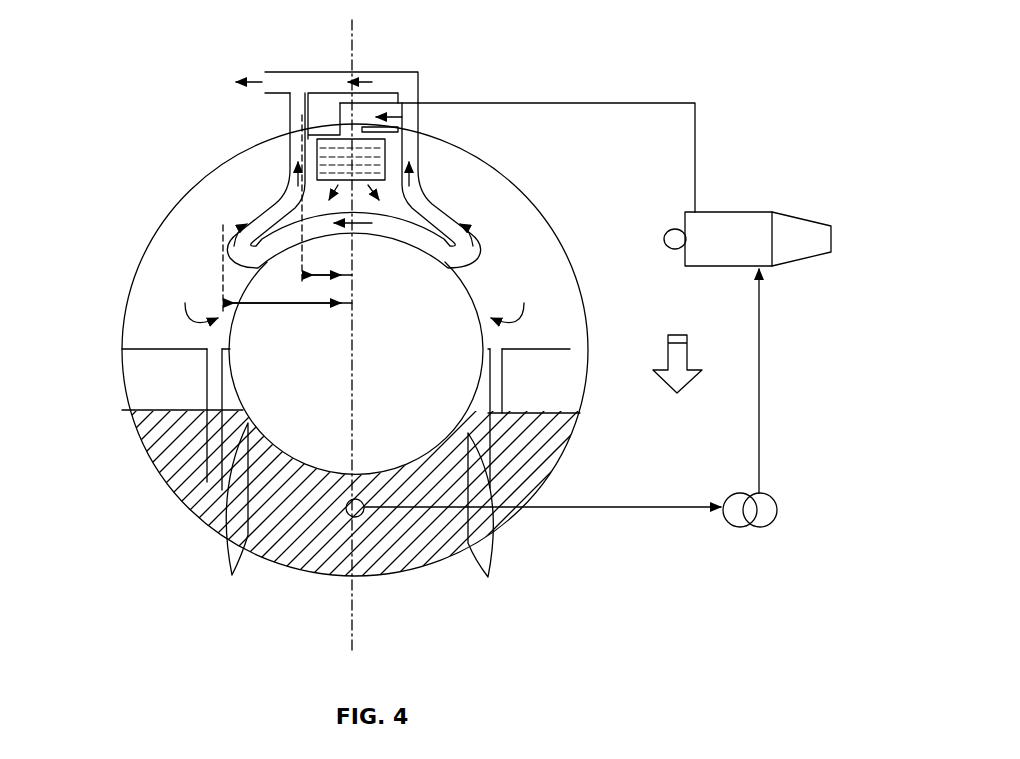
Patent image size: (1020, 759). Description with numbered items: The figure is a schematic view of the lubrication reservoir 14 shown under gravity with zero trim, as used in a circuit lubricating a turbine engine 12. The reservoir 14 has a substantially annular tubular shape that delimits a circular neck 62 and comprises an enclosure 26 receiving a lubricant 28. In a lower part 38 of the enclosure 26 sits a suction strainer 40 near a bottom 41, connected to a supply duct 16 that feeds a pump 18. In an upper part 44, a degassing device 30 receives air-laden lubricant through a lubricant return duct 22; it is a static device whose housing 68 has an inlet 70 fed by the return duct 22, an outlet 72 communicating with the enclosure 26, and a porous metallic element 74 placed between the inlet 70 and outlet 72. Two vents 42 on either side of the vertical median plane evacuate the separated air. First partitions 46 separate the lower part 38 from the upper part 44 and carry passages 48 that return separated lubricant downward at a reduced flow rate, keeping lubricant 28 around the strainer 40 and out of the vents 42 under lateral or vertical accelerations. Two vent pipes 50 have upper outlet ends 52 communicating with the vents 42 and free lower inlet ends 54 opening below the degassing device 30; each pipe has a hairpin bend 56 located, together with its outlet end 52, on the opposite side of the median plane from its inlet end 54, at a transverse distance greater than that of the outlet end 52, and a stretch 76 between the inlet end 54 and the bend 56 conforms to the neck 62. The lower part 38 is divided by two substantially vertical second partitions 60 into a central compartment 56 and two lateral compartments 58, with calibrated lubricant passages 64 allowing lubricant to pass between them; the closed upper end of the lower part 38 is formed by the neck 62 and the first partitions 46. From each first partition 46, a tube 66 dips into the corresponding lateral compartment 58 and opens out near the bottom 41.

The turbine engine 12 is at (741, 226).
The lubrication reservoir 14 is at (133, 75).
The supply duct 16 is at (637, 508).
The pump 18 is at (758, 529).
The lubricant return duct 22 is at (657, 103).
The enclosure 26 is at (103, 407).
The lubricant 28 is at (388, 500).
The degassing device 30 is at (330, 124).
The lower part 38 is at (189, 512).
The suction strainer 40 is at (364, 498).
The bottom 41 is at (263, 550).
The vent 42 is at (288, 117).
The upper part 44 is at (565, 246).
The first partition 46 is at (176, 343).
The passages 48 is at (123, 350).
The vent pipe 50 is at (373, 167).
The upper outlet end 52 is at (289, 147).
The lower inlet end 54 is at (211, 302).
The bend 56 is at (260, 196).
The lateral compartment 58 is at (351, 441).
The second partition 60 is at (315, 573).
The circular neck 62 is at (266, 428).
The calibrated lubricant passages 64 is at (266, 430).
The tube 66 is at (206, 394).
The housing 68 is at (401, 162).
The inlet 70 is at (354, 114).
The outlet 72 is at (311, 200).
The porous metallic element 74 is at (421, 176).
The stretch 76 is at (246, 275).